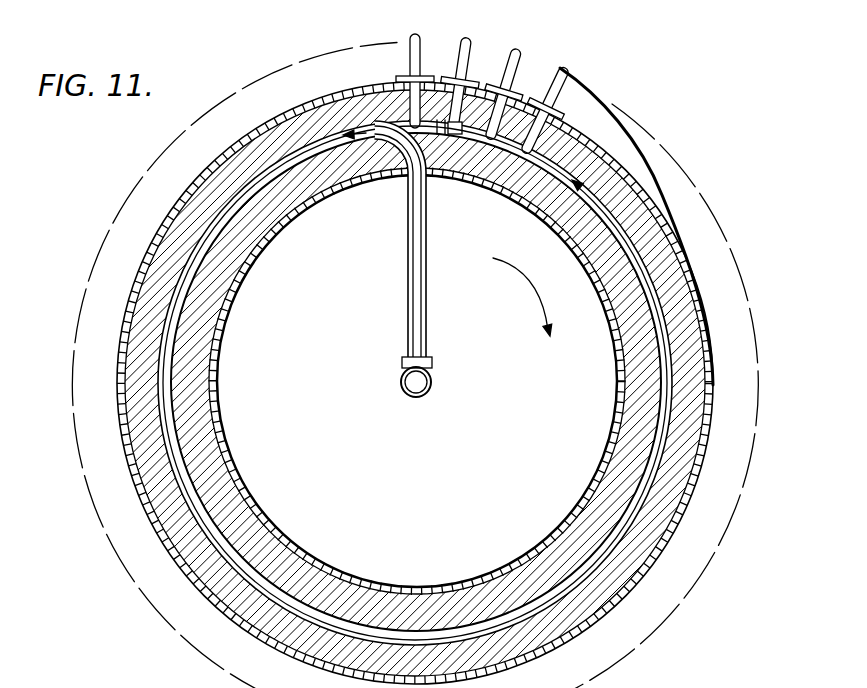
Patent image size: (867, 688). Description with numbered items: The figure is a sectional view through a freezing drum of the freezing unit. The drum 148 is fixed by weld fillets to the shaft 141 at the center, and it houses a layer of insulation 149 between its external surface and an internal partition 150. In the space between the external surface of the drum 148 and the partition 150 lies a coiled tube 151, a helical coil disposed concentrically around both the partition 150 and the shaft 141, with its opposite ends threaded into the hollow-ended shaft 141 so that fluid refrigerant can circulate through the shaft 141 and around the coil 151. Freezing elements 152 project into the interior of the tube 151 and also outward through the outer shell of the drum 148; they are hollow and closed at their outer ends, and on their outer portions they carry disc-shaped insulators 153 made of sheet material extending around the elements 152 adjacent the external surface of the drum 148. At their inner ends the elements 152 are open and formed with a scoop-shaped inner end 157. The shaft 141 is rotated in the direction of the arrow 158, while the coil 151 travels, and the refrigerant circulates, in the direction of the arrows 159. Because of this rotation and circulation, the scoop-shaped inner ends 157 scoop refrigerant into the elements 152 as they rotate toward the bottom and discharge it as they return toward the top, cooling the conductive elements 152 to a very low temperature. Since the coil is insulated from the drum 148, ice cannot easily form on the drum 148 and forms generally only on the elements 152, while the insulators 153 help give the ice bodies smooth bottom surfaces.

The shaft 141 is at (418, 398).
The drum 148 is at (677, 226).
The layer of insulation 149 is at (694, 311).
The internal partition 150 is at (626, 409).
The coiled tube 151 is at (406, 272).
The freezing elements 152 is at (555, 70).
The disc-shaped insulators 153 is at (412, 77).
The scoop-shaped inner end 157 is at (460, 136).
The arrow 158 is at (515, 298).
The arrows 159 is at (372, 130).